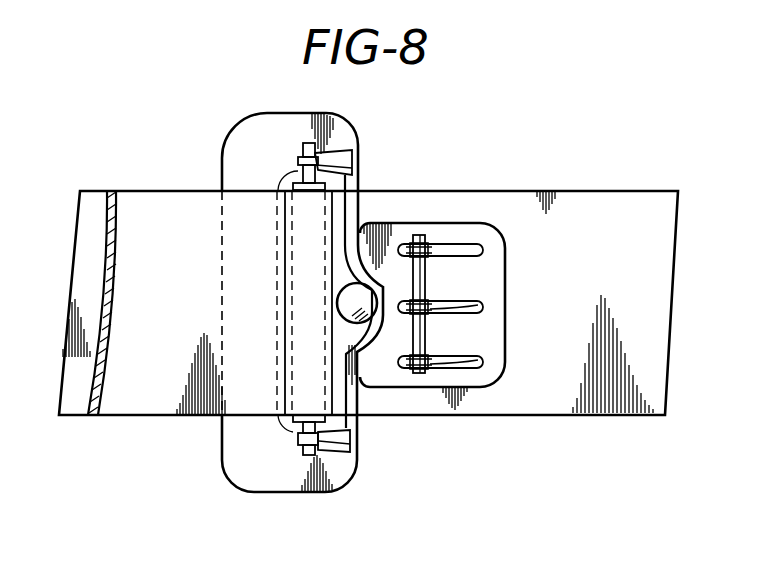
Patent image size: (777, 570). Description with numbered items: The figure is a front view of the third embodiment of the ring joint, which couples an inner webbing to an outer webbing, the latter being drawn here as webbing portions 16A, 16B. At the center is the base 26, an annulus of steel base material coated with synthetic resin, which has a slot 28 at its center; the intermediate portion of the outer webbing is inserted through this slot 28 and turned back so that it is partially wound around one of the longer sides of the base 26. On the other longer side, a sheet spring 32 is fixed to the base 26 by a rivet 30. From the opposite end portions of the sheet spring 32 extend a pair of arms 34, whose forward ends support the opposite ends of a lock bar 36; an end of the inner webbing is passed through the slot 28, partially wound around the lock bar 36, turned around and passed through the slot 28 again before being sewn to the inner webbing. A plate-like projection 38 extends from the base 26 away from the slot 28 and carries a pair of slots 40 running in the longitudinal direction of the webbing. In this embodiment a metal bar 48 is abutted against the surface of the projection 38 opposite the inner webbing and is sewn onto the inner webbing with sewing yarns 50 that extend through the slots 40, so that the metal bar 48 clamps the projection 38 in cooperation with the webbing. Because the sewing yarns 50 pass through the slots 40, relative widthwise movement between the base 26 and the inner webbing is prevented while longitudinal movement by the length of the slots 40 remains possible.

The belt body 16A is at (155, 410).
The belt edge strip 16B is at (75, 410).
The base 26 is at (283, 484).
The slot 28 is at (283, 428).
The rivet 30 is at (363, 322).
The sheet spring 32 is at (340, 204).
The arms 34 is at (344, 162).
The lock bar 36 is at (298, 180).
The plate-like projection 38 is at (497, 270).
The slots 40 is at (467, 247).
The metal bar 48 is at (421, 287).
The sewing yarns 50 is at (423, 252).